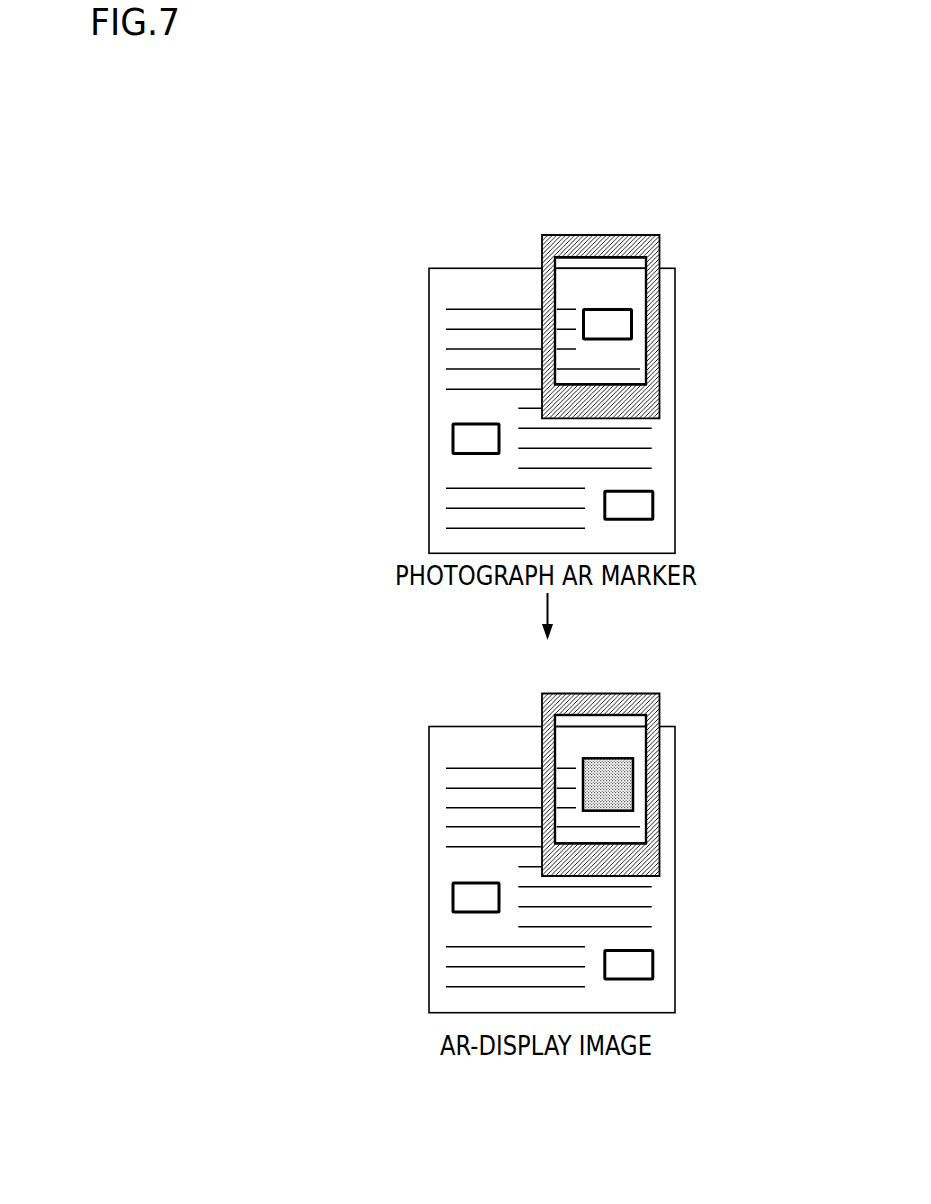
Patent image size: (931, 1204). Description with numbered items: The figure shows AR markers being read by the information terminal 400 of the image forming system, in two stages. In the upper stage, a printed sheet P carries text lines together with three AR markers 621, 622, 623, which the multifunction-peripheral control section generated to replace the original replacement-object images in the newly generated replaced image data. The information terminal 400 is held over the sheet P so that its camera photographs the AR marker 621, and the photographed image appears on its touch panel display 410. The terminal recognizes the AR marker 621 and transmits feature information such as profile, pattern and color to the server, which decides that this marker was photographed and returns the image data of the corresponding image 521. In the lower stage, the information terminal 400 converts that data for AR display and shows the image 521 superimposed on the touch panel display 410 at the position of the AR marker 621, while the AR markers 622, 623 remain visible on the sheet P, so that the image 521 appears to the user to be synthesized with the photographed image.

The information terminal 400 is at (573, 234).
The touch panel display 410 is at (575, 295).
The printed matter (paper) P is at (688, 274).
The AR marker 621 is at (633, 324).
The AR marker 622 is at (655, 506).
The AR marker 623 is at (452, 440).
The image 521 is at (635, 782).